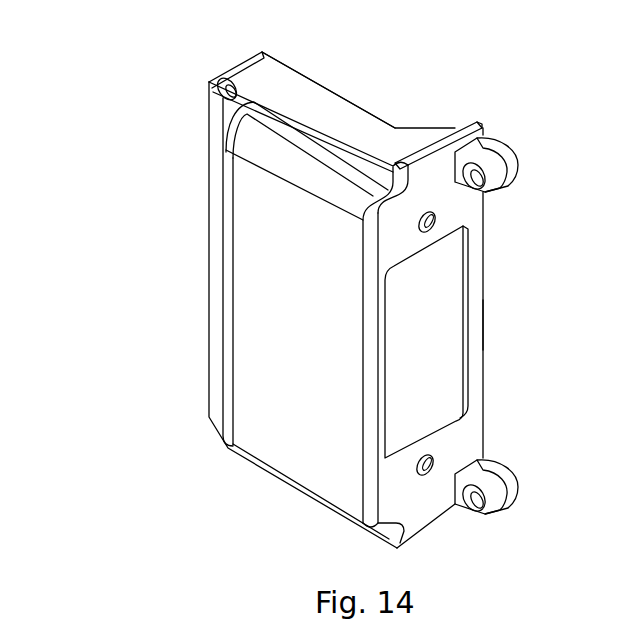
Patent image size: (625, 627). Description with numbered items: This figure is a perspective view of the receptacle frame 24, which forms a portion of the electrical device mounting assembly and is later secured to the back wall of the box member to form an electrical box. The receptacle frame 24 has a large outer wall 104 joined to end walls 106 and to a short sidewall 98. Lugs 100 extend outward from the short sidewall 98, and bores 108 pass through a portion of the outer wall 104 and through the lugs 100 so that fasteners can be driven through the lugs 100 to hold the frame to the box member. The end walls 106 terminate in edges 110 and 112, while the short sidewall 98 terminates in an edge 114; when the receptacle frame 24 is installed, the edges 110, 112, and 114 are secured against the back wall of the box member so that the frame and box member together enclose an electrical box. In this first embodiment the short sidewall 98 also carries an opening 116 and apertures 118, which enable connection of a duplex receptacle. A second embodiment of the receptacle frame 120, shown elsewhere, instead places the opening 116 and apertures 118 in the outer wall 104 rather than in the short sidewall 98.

The receptacle frame 24 is at (138, 84).
The short sidewall 98 is at (467, 207).
The lugs 100 is at (508, 150).
The outer wall 104 is at (312, 346).
The end walls 106 is at (332, 102).
The bores 108 is at (222, 97).
The edge 110 is at (297, 72).
The edge 112 is at (432, 128).
The edge 114 is at (485, 325).
The opening 116 is at (438, 363).
The apertures 118 is at (436, 452).
The receptacle frame (second embodiment) 120 is at (62, 620).